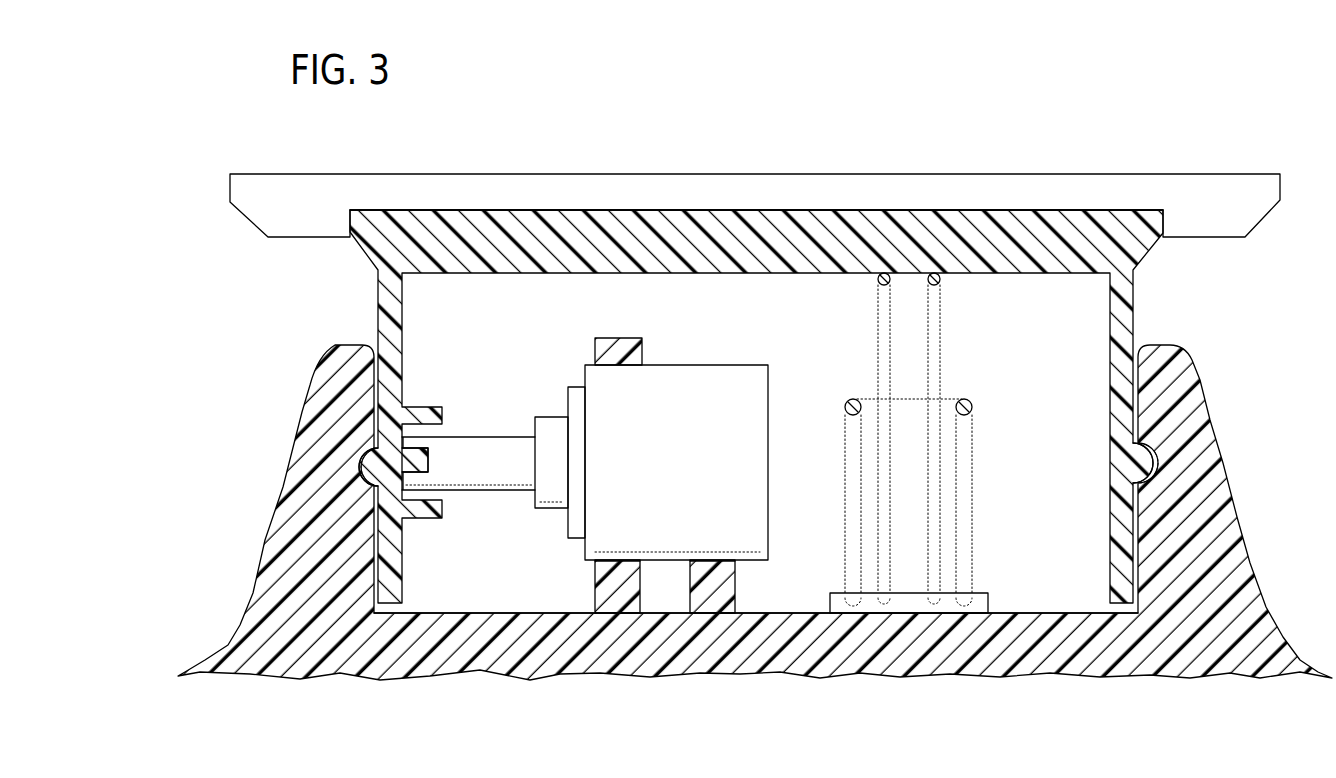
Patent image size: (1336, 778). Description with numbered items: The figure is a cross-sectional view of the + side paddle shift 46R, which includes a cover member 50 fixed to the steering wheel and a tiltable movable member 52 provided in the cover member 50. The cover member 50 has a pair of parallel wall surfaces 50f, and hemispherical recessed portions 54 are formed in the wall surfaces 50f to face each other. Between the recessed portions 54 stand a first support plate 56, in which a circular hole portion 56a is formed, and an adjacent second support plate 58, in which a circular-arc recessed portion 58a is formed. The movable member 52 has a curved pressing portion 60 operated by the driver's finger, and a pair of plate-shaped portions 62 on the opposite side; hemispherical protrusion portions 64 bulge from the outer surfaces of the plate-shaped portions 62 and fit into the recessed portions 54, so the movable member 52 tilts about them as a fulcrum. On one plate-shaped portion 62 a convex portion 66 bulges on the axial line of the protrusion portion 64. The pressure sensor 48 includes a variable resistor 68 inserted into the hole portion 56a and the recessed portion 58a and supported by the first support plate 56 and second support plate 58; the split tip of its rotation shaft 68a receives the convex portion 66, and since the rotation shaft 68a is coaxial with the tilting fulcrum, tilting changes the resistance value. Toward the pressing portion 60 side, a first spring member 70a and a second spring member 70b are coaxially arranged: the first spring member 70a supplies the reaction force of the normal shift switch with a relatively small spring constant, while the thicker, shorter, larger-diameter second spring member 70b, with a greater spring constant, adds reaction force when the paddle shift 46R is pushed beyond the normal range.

The + side paddle shift 46R is at (752, 346).
The pressure sensor 48 is at (632, 313).
The cover member 50 is at (1204, 372).
The wall surfaces 50f is at (381, 529).
The movable member 52 is at (1235, 166).
The recessed portions 54 is at (363, 450).
The first support plate 56 is at (608, 595).
The hole portion 56a is at (617, 560).
The second support plate 58 is at (727, 593).
The recessed portion 58a is at (712, 560).
The pressing portion 60 is at (833, 173).
The plate-shaped portions 62 is at (386, 320).
The protrusion portions 64 is at (357, 474).
The convex portion 66 is at (420, 461).
The variable resistor 68 is at (725, 378).
The rotation shaft 68a is at (492, 473).
The first spring member 70a is at (940, 283).
The second spring member 70b is at (973, 406).